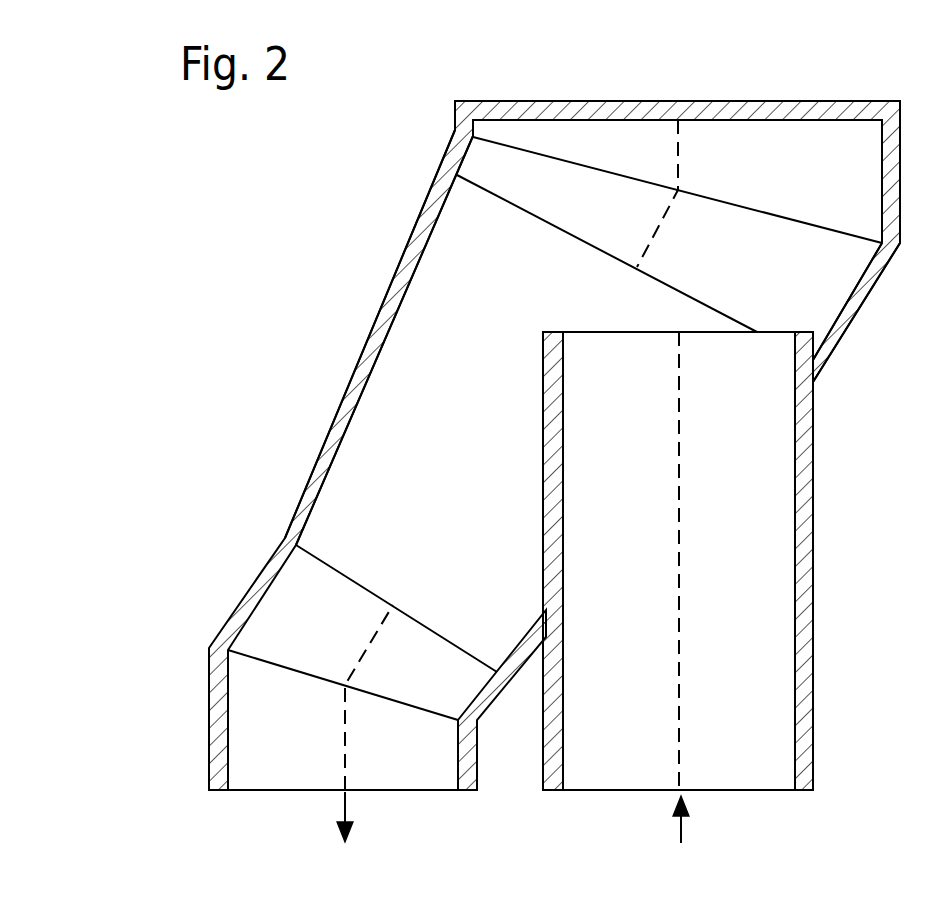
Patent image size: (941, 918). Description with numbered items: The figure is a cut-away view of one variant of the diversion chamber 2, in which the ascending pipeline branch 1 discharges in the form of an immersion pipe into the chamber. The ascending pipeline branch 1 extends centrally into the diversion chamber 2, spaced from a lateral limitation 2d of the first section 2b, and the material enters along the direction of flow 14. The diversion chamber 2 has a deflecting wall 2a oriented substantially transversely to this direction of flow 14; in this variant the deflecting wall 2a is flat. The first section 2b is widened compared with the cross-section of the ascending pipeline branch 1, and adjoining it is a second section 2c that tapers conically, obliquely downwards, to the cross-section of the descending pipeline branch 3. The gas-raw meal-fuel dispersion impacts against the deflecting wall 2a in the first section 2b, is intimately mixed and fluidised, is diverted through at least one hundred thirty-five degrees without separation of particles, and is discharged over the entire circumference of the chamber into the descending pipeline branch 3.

The ascending pipeline branch 1 is at (772, 545).
The diversion chamber 2 is at (332, 211).
The deflecting wall 2a is at (746, 101).
The first section 2b is at (428, 228).
The second section 2c is at (413, 447).
The lateral limitation 2d is at (828, 295).
The descending pipeline branch 3 is at (277, 763).
The direction of flow 14 is at (682, 835).